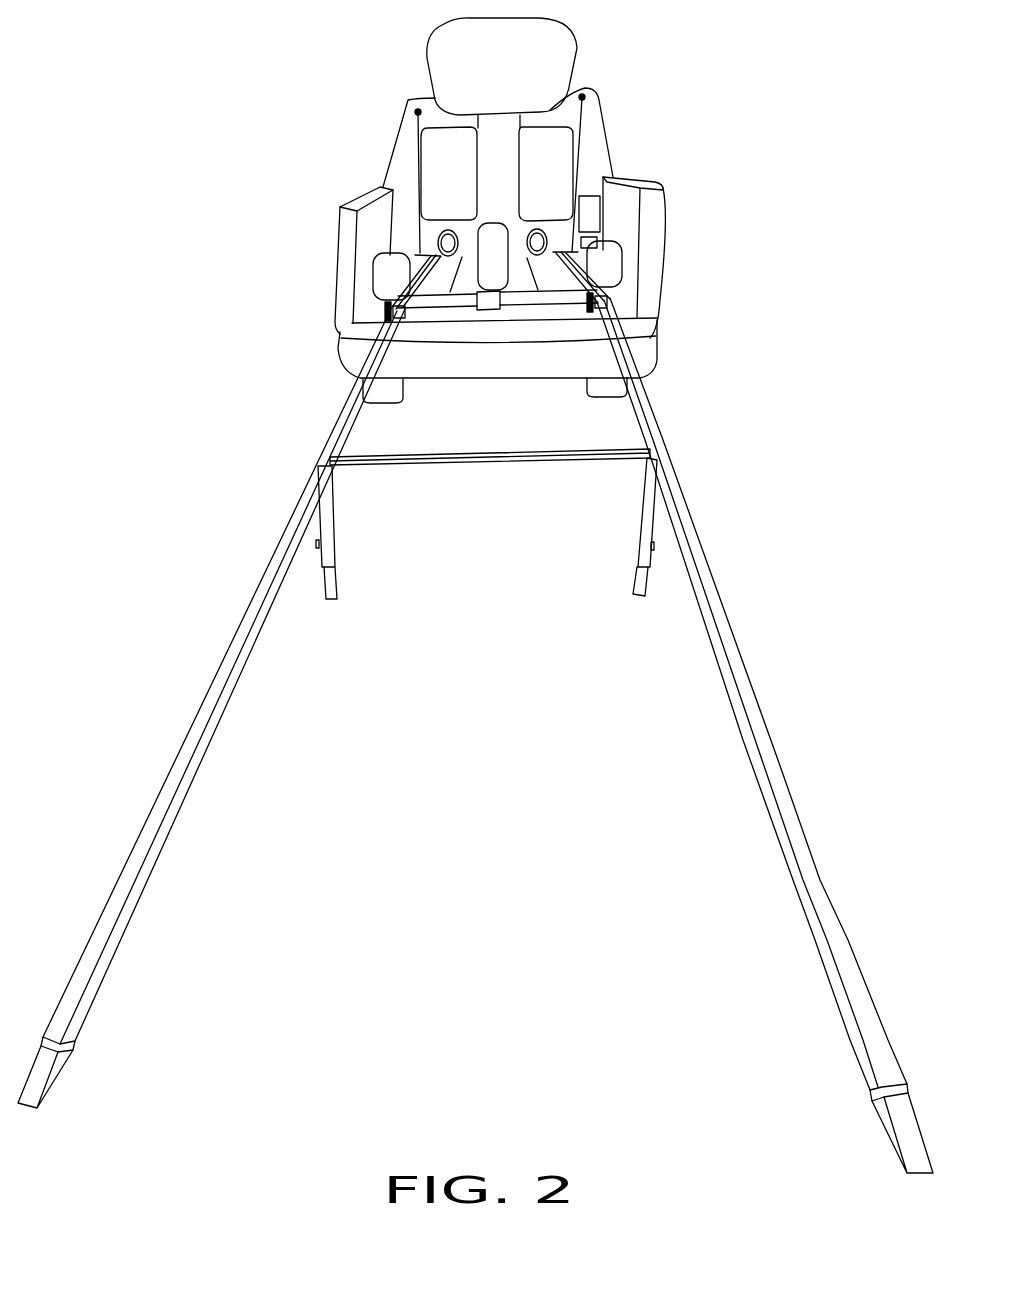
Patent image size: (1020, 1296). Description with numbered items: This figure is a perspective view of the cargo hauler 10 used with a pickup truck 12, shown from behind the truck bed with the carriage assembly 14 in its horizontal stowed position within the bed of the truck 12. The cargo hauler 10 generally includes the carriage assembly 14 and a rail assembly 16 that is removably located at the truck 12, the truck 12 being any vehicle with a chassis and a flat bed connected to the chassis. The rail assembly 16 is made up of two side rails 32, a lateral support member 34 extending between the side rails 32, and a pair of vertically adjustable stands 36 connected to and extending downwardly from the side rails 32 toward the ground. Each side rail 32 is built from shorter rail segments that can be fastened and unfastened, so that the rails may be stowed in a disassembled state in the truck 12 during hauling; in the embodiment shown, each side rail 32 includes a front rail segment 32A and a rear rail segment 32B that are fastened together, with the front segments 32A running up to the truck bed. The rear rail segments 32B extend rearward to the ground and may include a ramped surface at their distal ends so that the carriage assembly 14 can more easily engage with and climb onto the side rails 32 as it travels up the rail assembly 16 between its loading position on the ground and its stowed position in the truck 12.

The cargo hauler 10 is at (310, 442).
The pickup truck 12 is at (637, 177).
The carriage assembly 14 is at (383, 314).
The rail assembly 16 is at (702, 518).
The side rail 32 is at (207, 687).
The rail segment 32A is at (355, 400).
The rear rail segment 32B is at (117, 920).
The lateral support member 34 is at (481, 460).
The vertically adjustable stand 36 is at (332, 552).